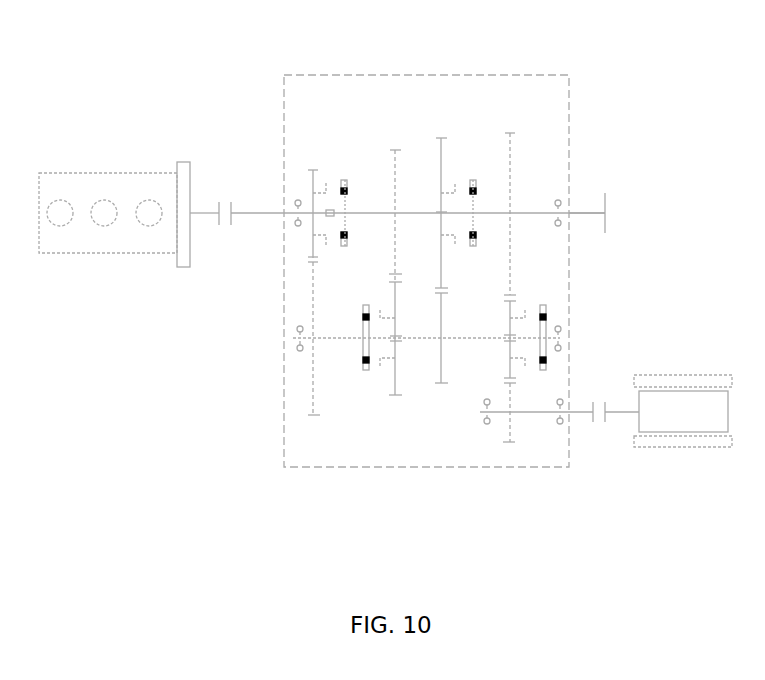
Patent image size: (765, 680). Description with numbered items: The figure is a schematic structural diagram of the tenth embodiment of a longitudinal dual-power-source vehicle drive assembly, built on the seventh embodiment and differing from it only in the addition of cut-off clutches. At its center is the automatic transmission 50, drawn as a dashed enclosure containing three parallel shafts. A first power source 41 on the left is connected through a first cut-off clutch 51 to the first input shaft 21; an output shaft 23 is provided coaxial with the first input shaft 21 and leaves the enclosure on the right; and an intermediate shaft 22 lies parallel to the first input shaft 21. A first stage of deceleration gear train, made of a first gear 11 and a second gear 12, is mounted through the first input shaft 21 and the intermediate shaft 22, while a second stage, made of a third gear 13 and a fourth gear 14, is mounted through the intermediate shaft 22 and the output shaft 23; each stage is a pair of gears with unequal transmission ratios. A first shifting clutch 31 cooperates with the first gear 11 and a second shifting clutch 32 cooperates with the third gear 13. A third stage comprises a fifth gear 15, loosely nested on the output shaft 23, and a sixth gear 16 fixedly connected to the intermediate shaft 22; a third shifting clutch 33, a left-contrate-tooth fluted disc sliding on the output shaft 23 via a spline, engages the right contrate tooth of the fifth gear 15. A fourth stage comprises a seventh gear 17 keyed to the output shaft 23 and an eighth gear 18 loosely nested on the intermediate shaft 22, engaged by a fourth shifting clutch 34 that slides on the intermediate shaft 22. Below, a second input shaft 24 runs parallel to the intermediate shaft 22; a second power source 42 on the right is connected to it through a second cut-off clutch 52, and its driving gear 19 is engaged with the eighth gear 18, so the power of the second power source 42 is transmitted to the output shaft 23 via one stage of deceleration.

The first gear 11 is at (313, 170).
The second gear 12 is at (308, 415).
The third gear 13 is at (395, 150).
The fourth gear 14 is at (396, 395).
The fifth gear 15 is at (442, 138).
The sixth gear 16 is at (441, 383).
The seventh gear 17 is at (513, 132).
The eighth gear 18 is at (527, 308).
The driving gear 19 is at (503, 442).
The first input shaft 21 is at (281, 213).
The intermediate shaft 22 is at (297, 338).
The output shaft 23 is at (586, 212).
The second input shaft 24 is at (538, 412).
The first shifting clutch 31 is at (347, 180).
The second shifting clutch 32 is at (366, 370).
The third shifting clutch 33 is at (472, 180).
The fourth shifting clutch 34 is at (545, 305).
The first power source 41 is at (120, 253).
The second power source 42 is at (700, 447).
The automatic transmission 50 is at (325, 75).
The first cut-off clutch 51 is at (219, 202).
The second cut-off clutch 52 is at (605, 400).